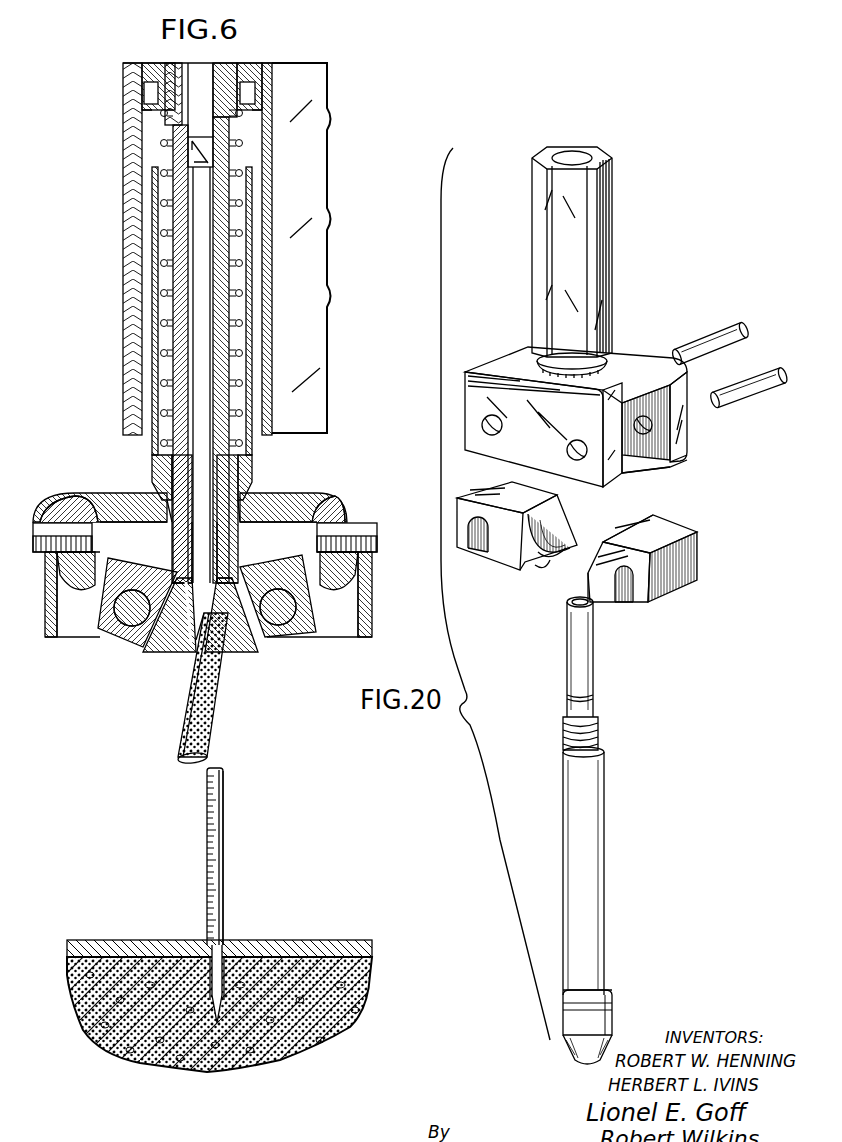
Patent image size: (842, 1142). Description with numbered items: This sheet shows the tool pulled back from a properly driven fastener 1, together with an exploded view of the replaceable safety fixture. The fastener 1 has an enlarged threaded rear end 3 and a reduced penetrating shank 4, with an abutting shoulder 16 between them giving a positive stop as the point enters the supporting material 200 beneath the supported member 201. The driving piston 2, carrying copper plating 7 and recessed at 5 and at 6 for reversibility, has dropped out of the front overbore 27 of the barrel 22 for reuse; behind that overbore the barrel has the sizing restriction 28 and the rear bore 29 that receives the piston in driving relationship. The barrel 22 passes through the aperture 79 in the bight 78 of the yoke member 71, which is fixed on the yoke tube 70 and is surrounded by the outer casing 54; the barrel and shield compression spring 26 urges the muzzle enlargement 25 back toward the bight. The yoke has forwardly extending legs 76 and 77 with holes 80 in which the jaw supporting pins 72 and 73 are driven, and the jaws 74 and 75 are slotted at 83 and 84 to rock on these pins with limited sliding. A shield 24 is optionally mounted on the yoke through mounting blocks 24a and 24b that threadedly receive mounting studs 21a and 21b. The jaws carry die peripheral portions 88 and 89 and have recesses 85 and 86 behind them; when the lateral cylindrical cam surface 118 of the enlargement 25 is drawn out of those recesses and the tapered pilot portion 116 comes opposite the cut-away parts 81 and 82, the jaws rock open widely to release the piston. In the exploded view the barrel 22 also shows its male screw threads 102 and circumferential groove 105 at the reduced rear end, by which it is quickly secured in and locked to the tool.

In FIG. 6, the fastener 1 is at (229, 880).
In FIG. 6, the piston 2 is at (200, 688).
In FIG. 6, the enlarged threaded rear end 3 is at (206, 845).
In FIG. 6, the reduced penetrating shank 4 is at (212, 975).
In FIG. 6, the piston recess 5 is at (186, 667).
In FIG. 6, the piston recess 6 is at (186, 743).
In FIG. 6, the copper plating 7 is at (189, 702).
In FIG. 6, the abutting shoulder 16 is at (222, 950).
In FIG. 6, the shield mounting stud 21a is at (37, 523).
In FIG. 6, the shield mounting stud 21b is at (372, 523).
In FIG. 6, the interchangeable barrel 22 is at (173, 346).
In FIG. 20, the interchangeable barrel 22 is at (596, 831).
In FIG. 6, the shield 24 is at (48, 632).
In FIG. 6, the shield mounting block 24a is at (70, 585).
In FIG. 6, the shield mounting block 24b is at (330, 585).
In FIG. 6, the muzzle enlargement 25 is at (168, 532).
In FIG. 20, the muzzle enlargement 25 is at (618, 1018).
In FIG. 6, the barrel and shield compression spring 26 is at (161, 236).
In FIG. 6, the front overbore 27 is at (210, 372).
In FIG. 6, the restriction 28 is at (212, 158).
In FIG. 6, the rear end part of the barrel bore 29 is at (215, 63).
In FIG. 6, the outer casing 54 is at (127, 150).
In FIG. 6, the yoke tube 70 is at (152, 290).
In FIG. 20, the yoke tube 70 is at (610, 215).
In FIG. 6, the yoke member 71 is at (133, 478).
In FIG. 20, the yoke member 71 is at (593, 398).
In FIG. 6, the jaw supporting pin 72 is at (125, 617).
In FIG. 20, the jaw supporting pin 72 is at (712, 333).
In FIG. 6, the jaw supporting pin 73 is at (285, 618).
In FIG. 20, the jaw supporting pin 73 is at (753, 378).
In FIG. 6, the jaw 74 is at (122, 568).
In FIG. 20, the jaw 74 is at (531, 546).
In FIG. 6, the jaw 75 is at (270, 571).
In FIG. 20, the jaw 75 is at (631, 562).
In FIG. 20, the leg 76 is at (625, 473).
In FIG. 20, the leg 77 is at (680, 443).
In FIG. 6, the bight portion 78 is at (128, 497).
In FIG. 20, the bight portion 78 is at (620, 362).
In FIG. 6, the aperture 79 is at (262, 500).
In FIG. 20, the holes 80 is at (490, 418).
In FIG. 6, the cut-away part 81 is at (190, 598).
In FIG. 20, the cut-away part 81 is at (566, 532).
In FIG. 6, the cut-away part 82 is at (230, 575).
In FIG. 20, the cut-away part 82 is at (587, 545).
In FIG. 20, the slot 83 is at (483, 550).
In FIG. 20, the slot 84 is at (625, 598).
In FIG. 20, the jaw recess 85 is at (545, 522).
In FIG. 20, the jaw recess 86 is at (625, 537).
In FIG. 6, the peripheral portion 88 is at (182, 652).
In FIG. 20, the peripheral portion 88 is at (550, 560).
In FIG. 6, the peripheral portion 89 is at (246, 652).
In FIG. 20, the male screw threads 102 is at (600, 730).
In FIG. 20, the circumferential groove 105 is at (594, 700).
In FIG. 20, the tapered jaw pilot and jaw clearance portion 116 is at (580, 1049).
In FIG. 20, the lateral cylindrical cam surface 118 is at (577, 1012).
In FIG. 6, the supporting material 200 is at (293, 1048).
In FIG. 6, the supported member 201 is at (310, 940).